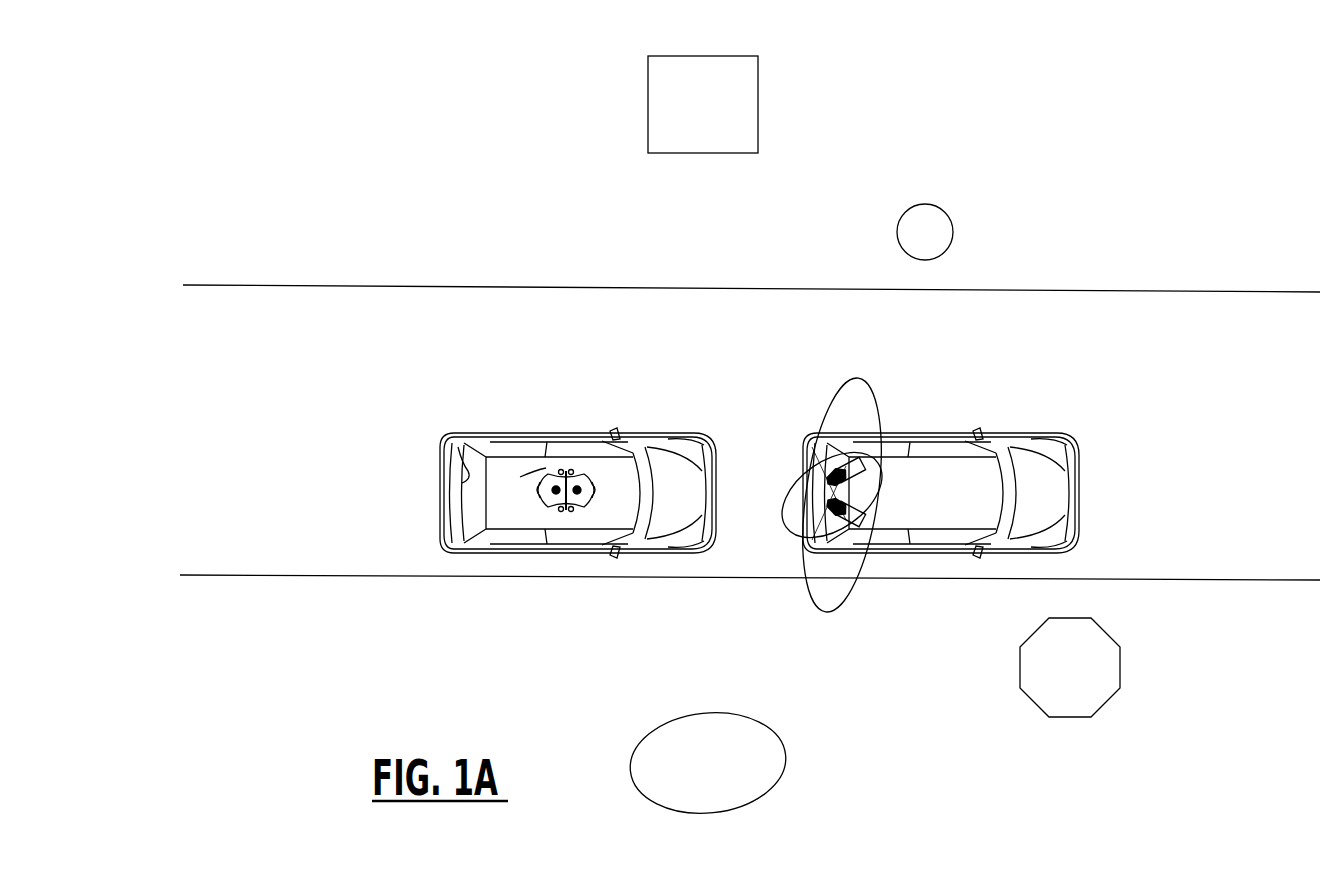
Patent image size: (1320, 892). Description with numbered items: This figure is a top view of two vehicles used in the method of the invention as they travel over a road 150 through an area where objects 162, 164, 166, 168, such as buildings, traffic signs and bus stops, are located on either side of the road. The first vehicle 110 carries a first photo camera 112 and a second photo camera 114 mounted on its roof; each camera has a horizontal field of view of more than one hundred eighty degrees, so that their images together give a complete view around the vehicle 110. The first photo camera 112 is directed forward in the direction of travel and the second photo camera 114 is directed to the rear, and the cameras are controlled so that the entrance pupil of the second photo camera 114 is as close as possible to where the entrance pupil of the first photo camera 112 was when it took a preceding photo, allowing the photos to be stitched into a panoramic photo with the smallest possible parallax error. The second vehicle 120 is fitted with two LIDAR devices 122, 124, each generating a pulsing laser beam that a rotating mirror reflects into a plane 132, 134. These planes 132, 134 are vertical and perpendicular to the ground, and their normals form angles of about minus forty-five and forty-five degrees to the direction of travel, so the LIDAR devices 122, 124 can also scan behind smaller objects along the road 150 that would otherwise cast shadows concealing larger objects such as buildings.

The vehicle 110 is at (668, 476).
The first photo camera 112 is at (584, 470).
The second photo camera 114 is at (546, 470).
The second vehicle 120 is at (1030, 473).
The LIDAR device 122 is at (866, 472).
The LIDAR device 124 is at (866, 508).
The plane 132 is at (873, 412).
The plane 134 is at (872, 590).
The road 150 is at (1204, 316).
The object 162 is at (915, 233).
The object 164 is at (670, 108).
The object 166 is at (1034, 681).
The object 168 is at (652, 764).